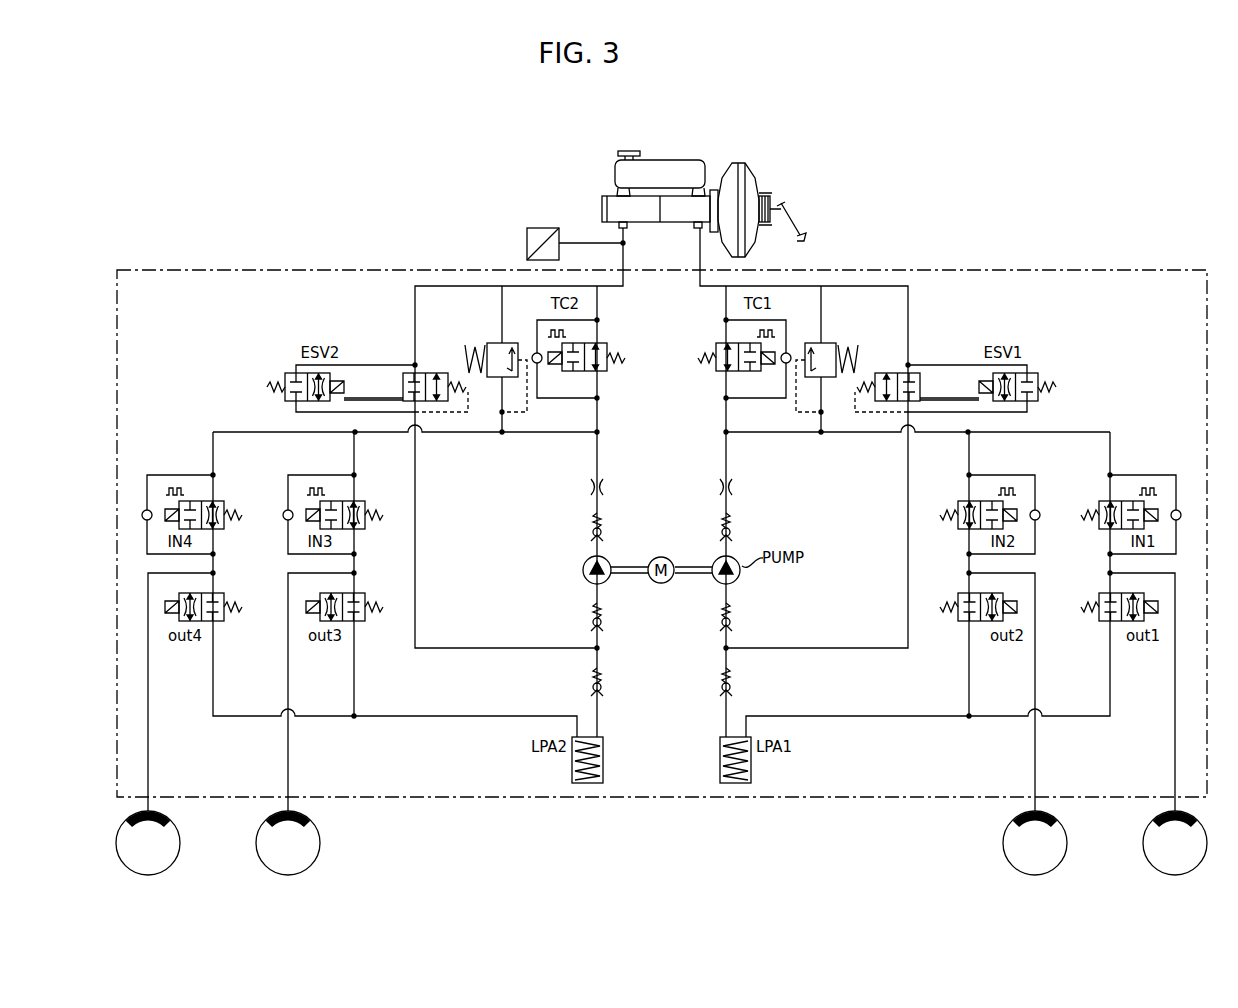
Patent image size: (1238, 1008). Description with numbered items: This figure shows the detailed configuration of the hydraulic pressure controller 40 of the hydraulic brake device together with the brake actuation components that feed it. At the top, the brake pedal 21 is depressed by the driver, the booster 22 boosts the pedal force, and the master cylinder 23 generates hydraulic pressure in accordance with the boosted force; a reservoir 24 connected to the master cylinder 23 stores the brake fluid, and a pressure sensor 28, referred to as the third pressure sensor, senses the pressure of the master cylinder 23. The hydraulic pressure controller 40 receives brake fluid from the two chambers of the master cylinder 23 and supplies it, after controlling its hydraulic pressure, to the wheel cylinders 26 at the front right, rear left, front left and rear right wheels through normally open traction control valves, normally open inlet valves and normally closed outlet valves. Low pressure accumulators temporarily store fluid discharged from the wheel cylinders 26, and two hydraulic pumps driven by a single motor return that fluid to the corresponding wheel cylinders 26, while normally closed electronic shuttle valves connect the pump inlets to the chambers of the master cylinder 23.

The brake pedal 21 is at (797, 219).
The booster 22 is at (736, 163).
The master cylinder 23 is at (603, 208).
The reservoir 24 is at (655, 160).
The wheel cylinders 26 is at (644, 840).
The pressure sensor 28 is at (527, 232).
The hydraulic pressure controller 40 is at (1080, 270).